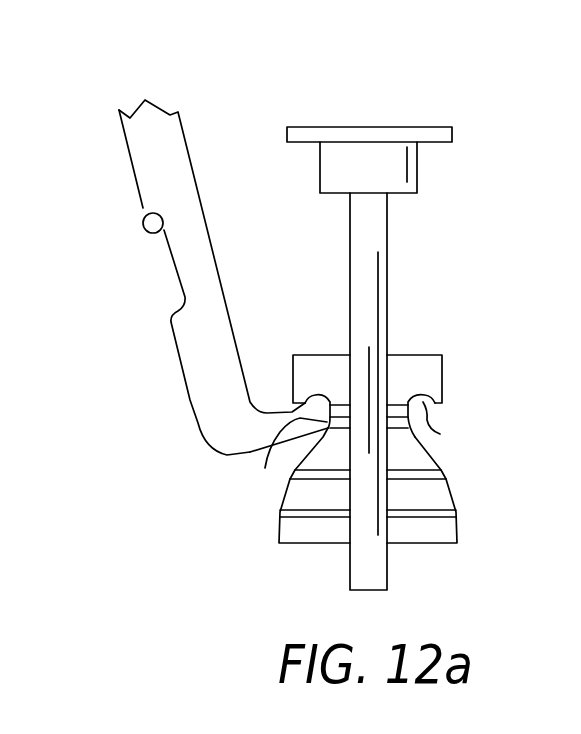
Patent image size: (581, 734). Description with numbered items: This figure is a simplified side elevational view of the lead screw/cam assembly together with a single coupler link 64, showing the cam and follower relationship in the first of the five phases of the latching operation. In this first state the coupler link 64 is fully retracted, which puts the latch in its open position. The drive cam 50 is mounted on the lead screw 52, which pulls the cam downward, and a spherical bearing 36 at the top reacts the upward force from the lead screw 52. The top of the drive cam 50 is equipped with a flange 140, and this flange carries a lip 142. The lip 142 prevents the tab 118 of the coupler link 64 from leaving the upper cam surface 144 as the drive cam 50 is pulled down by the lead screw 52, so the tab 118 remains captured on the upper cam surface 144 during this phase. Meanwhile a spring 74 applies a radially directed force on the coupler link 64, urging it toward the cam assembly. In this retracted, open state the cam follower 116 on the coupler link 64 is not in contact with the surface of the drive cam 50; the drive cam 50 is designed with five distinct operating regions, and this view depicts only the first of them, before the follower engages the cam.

The spherical bearing 36 is at (373, 125).
The drive cam 50 is at (312, 543).
The lead screw 52 is at (388, 565).
The coupler link 64 is at (188, 143).
The spring 74 is at (143, 224).
The cam follower 116 is at (265, 468).
The tab 118 is at (318, 398).
The flange 140 is at (417, 368).
The lip 142 is at (442, 406).
The upper cam surface 144 is at (440, 434).